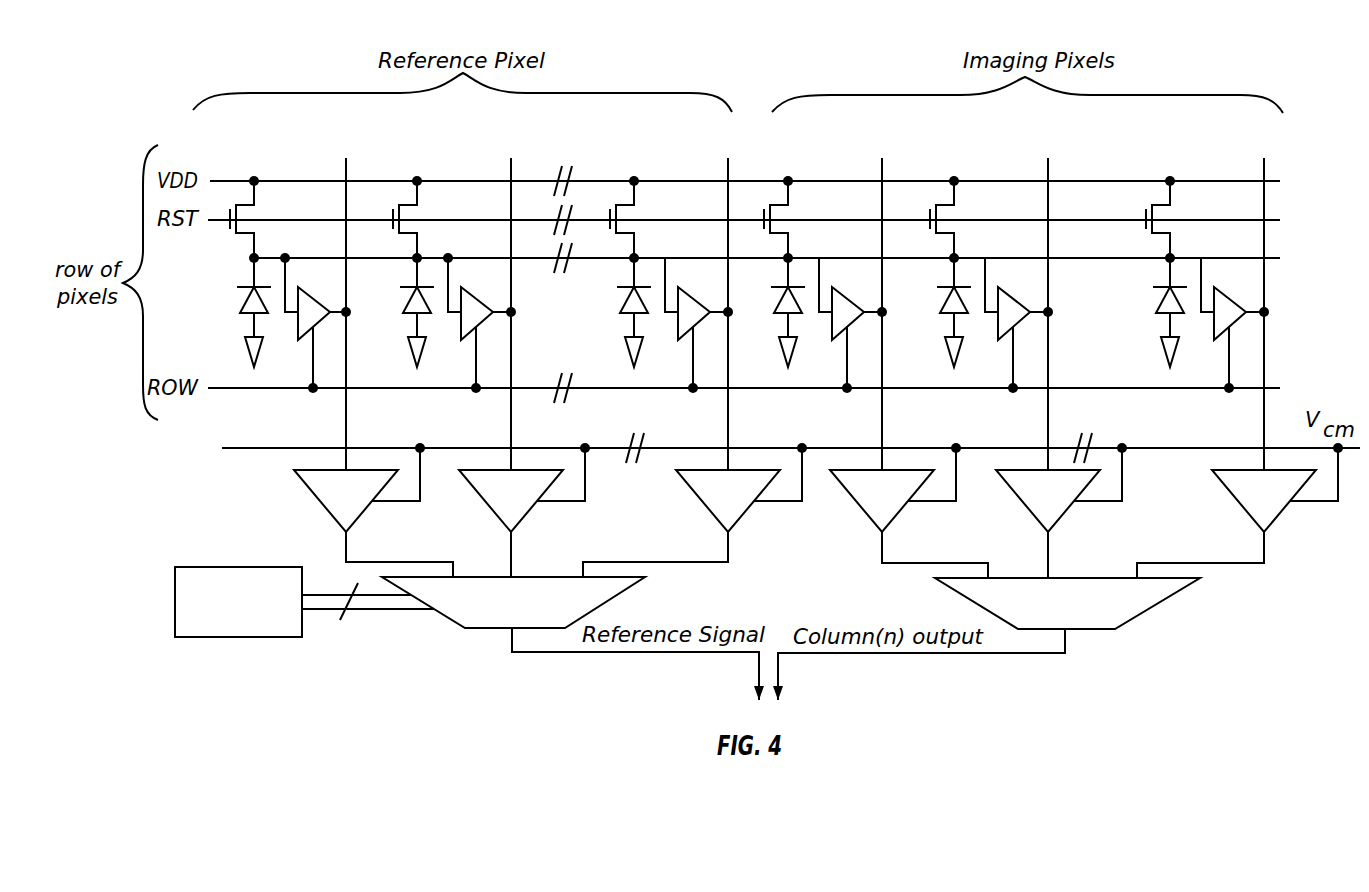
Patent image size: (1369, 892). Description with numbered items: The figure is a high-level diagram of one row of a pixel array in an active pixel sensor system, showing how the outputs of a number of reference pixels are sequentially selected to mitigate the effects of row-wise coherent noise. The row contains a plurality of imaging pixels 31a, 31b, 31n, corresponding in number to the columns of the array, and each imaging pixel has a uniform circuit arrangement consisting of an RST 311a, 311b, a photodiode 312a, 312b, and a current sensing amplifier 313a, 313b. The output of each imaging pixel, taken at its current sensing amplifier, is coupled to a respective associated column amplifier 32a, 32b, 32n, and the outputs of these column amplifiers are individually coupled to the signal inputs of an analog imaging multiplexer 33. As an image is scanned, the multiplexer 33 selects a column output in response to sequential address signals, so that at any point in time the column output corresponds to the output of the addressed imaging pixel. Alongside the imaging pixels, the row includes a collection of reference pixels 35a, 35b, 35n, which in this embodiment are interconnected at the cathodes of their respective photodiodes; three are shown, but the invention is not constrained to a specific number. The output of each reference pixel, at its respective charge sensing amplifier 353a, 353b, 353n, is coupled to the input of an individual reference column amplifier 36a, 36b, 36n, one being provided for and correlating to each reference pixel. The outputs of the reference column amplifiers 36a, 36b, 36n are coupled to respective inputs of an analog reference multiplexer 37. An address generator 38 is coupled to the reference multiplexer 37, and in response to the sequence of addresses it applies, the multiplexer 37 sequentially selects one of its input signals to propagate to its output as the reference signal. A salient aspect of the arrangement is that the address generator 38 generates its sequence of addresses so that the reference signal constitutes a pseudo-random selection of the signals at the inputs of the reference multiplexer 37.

The reference pixel 35a is at (259, 171).
The reference pixel 35b is at (422, 171).
The reference pixel 35n is at (639, 171).
The imaging pixel 31a is at (793, 171).
The imaging pixel 31b is at (959, 171).
The imaging pixel 31n is at (1177, 172).
The charge sensing amplifier 353a is at (320, 286).
The charge sensing amplifier 353b is at (483, 286).
The charge sensing amplifier 353n is at (700, 286).
The RST 311a is at (788, 195).
The RST 311b is at (954, 195).
The photodiode 312a is at (785, 333).
The photodiode 312b is at (949, 352).
The current sensing amplifier 313a is at (854, 300).
The current sensing amplifier 313b is at (1020, 300).
The reference column amplifier 36a is at (363, 513).
The reference column amplifier 36b is at (528, 513).
The reference column amplifier 36n is at (745, 513).
The column amplifier 32a is at (899, 513).
The column amplifier 32b is at (1065, 513).
The column amplifier 32n is at (1281, 513).
The analog reference multiplexer 37 is at (622, 592).
The multiplexer 33 is at (1115, 629).
The address generator 38 is at (241, 548).